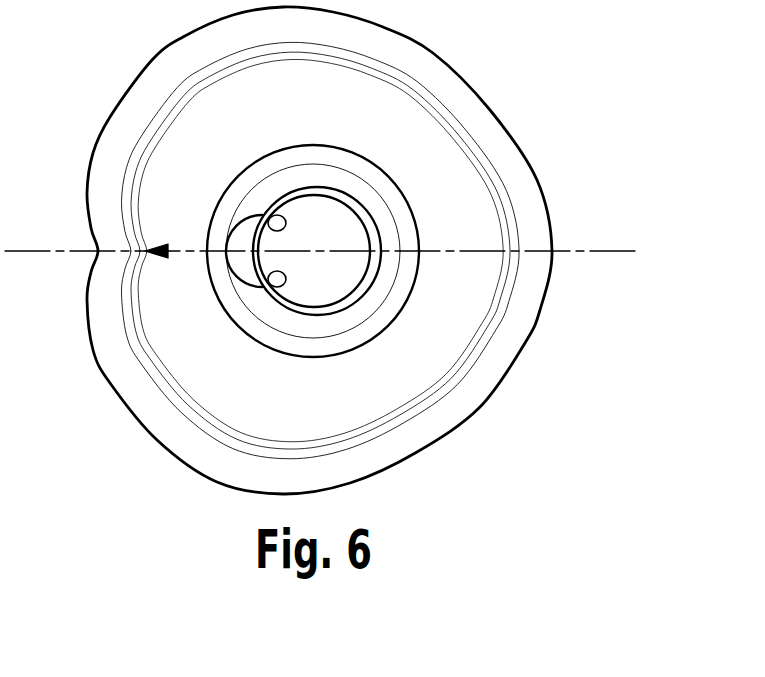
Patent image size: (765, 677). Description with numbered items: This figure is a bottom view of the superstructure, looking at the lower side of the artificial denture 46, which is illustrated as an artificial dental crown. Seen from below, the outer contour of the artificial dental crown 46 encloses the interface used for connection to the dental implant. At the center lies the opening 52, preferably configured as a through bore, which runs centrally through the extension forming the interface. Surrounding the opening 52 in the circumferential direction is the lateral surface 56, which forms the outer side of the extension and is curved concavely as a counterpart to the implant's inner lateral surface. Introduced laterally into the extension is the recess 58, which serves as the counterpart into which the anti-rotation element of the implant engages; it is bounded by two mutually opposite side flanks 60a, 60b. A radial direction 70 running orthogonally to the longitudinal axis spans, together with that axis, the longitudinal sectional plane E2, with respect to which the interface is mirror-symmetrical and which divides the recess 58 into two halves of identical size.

The artificial denture 46 is at (518, 192).
The opening 52 is at (330, 266).
The lateral surface 56 is at (373, 202).
The recess 58 is at (249, 266).
The side flank 60a is at (279, 287).
The side flank 60b is at (278, 216).
The radial direction 70 is at (187, 251).
The longitudinal sectional plane E2 is at (612, 253).